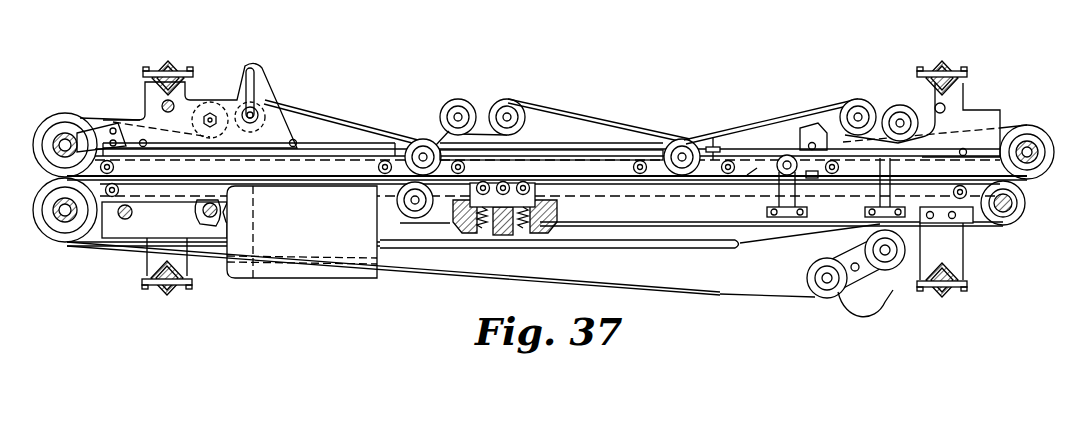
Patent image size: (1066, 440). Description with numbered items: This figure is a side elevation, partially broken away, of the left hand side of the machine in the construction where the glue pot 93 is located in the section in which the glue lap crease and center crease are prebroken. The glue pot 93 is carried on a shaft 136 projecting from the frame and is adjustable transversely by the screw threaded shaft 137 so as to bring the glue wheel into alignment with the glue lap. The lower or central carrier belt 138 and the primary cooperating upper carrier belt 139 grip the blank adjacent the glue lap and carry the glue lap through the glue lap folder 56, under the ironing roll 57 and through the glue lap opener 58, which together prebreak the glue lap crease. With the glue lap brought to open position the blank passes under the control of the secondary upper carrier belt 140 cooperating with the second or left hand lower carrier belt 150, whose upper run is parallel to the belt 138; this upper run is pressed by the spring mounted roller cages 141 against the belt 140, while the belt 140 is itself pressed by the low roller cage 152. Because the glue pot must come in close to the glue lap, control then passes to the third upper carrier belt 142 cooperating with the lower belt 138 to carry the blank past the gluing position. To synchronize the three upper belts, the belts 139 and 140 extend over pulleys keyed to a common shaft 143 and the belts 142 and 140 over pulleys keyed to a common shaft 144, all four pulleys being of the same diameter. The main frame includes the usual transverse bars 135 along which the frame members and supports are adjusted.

The transverse bar 135 is at (170, 68).
The shaft 136 is at (205, 212).
The screw threaded shaft 137 is at (236, 218).
The glue pot 93 is at (305, 245).
The lower or central carrier belt 138 is at (670, 290).
The primary cooperating upper carrier belt 139 is at (760, 117).
The secondary upper carrier belt 140 is at (580, 108).
The spring mounted roller cages 141 is at (482, 220).
The third upper carrier belt 142 is at (330, 105).
The common shaft 143 is at (684, 152).
The common shaft 144 is at (423, 155).
The second or left hand lower carrier belt 150 is at (688, 232).
The roller cage 152 is at (545, 165).
The glue lap folder 56 is at (851, 176).
The ironing roll 57 is at (788, 160).
The glue lap opener 58 is at (738, 178).